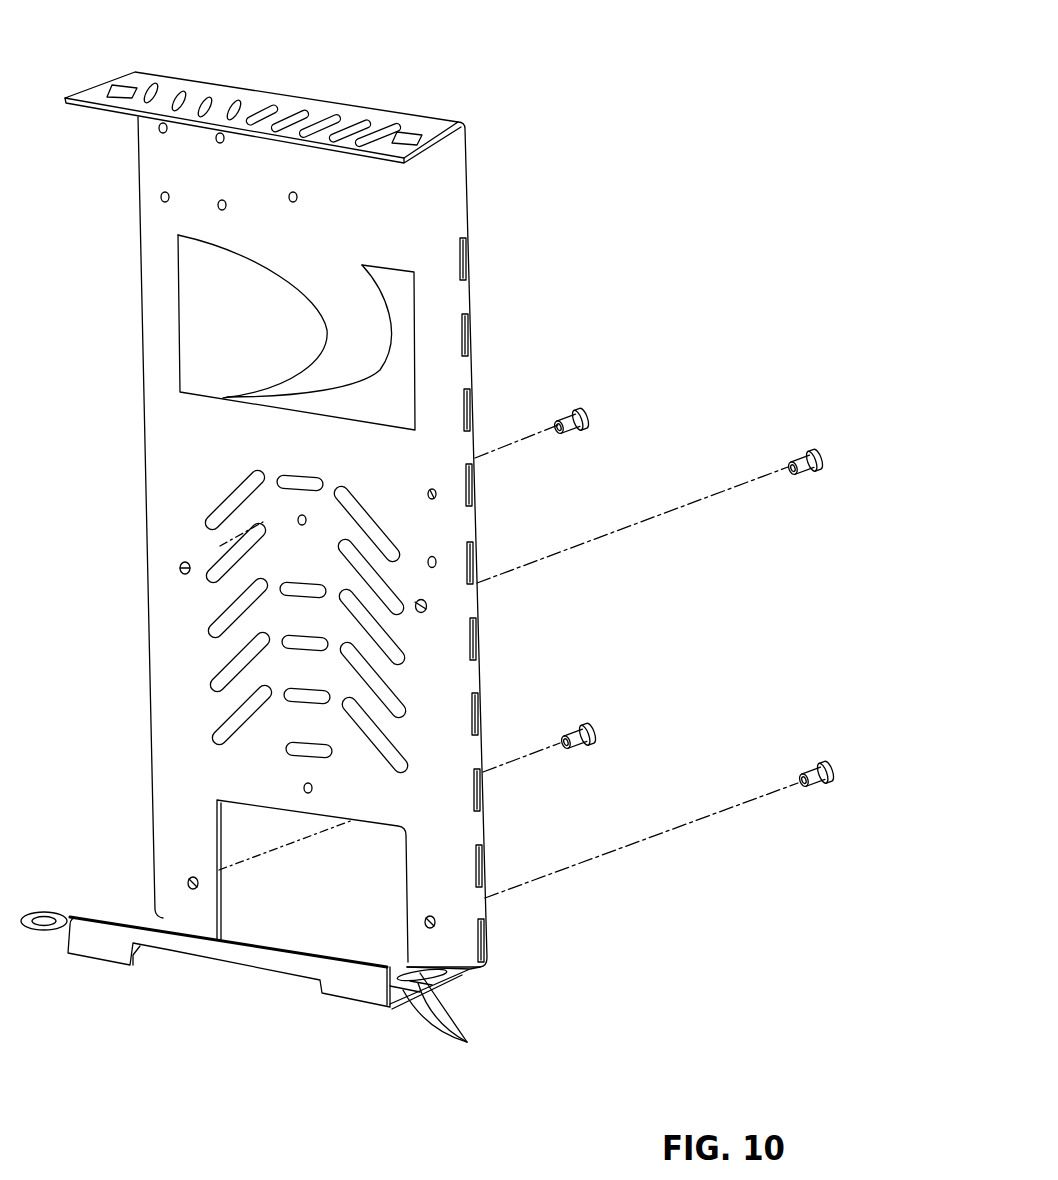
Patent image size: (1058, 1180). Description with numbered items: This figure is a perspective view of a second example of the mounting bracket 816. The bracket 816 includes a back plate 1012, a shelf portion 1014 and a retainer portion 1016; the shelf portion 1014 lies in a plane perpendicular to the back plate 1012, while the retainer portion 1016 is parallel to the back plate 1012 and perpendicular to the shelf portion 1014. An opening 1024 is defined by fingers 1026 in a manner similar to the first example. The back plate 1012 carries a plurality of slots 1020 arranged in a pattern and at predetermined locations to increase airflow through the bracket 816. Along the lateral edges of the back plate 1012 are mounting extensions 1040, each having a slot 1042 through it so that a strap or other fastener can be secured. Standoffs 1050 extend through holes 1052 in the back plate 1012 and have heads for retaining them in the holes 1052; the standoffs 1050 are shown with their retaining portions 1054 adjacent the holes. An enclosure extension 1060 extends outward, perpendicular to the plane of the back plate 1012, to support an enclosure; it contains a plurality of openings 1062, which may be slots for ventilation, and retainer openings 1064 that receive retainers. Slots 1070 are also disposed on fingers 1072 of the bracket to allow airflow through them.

The mounting bracket 816 is at (437, 203).
The back plate 1012 is at (389, 199).
The shelf portion 1014 is at (467, 970).
The retainer portion 1016 is at (93, 943).
The slots 1020 is at (378, 530).
The opening 1024 is at (334, 899).
The fingers 1026 is at (175, 850).
The mounting extensions 1040 is at (478, 609).
The slots 1042 is at (480, 672).
The standoffs 1050 is at (577, 407).
The holes 1052 is at (180, 568).
The grommet flange 1054 is at (573, 432).
The enclosure extension 1060 is at (65, 107).
The openings 1062 is at (378, 130).
The retainer openings 1064 is at (123, 96).
The slots 1070 is at (458, 1015).
The fingers 1072 is at (395, 1003).